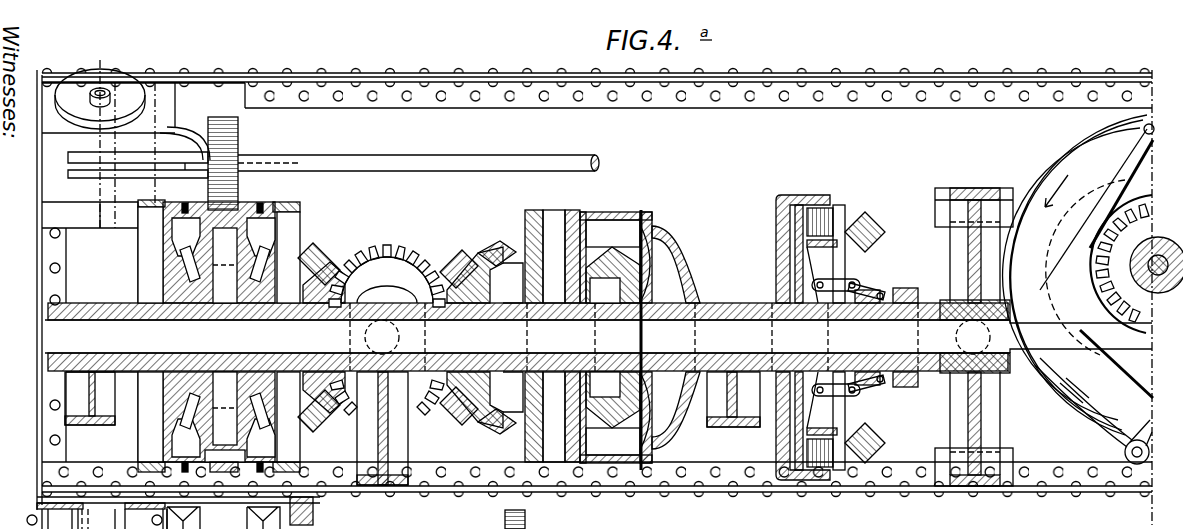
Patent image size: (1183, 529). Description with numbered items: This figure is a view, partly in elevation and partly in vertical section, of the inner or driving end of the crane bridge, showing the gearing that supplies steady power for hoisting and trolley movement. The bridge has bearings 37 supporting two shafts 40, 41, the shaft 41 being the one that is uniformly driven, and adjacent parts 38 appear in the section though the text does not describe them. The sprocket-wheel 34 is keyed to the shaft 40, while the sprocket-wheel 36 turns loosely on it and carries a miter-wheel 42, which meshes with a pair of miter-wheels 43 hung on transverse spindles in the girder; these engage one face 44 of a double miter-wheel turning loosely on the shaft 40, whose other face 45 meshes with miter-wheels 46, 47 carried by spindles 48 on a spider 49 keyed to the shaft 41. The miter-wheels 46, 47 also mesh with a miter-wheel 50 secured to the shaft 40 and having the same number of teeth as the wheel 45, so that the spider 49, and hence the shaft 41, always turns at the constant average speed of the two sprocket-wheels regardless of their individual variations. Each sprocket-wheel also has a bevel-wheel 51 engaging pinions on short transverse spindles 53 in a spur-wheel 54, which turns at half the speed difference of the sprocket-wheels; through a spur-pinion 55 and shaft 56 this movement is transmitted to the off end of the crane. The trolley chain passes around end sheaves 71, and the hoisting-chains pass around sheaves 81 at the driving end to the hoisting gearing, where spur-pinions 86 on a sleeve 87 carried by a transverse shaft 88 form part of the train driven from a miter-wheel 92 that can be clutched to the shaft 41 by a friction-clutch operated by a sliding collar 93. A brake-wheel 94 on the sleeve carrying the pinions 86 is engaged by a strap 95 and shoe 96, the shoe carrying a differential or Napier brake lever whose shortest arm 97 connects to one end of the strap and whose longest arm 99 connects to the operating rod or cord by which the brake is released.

The sprocket-wheel 34 is at (186, 337).
The sprocket-wheel 36 is at (261, 337).
The bearings 37 is at (539, 337).
The clutch block 38 is at (222, 329).
The shaft 40 is at (343, 337).
The shaft 41 is at (896, 337).
The miter-wheel 42 is at (315, 272).
The miter-wheels 43 is at (387, 258).
The face of double miter-wheel 44 is at (456, 270).
The face of double miter-wheel 45 is at (475, 337).
The miter-wheel 46 is at (500, 269).
The miter-wheel 47 is at (500, 409).
The spindles 48 is at (552, 336).
The frame or spider 49 is at (640, 340).
The miter-wheel 50 is at (622, 296).
The bevel-wheel 51 is at (178, 268).
The transverse spindles 53 is at (225, 336).
The spur-wheel 54 is at (224, 474).
The spur-pinion 55 is at (240, 143).
The shaft 56 is at (442, 160).
The end sheaves 71 is at (100, 99).
The sheaves 81 is at (128, 152).
The spur-pinion 86 is at (1121, 264).
The sleeve 87 is at (1146, 265).
The transverse shaft 88 is at (1149, 268).
The miter-wheel 92 is at (866, 230).
The sliding collar 93 is at (901, 297).
The brake-wheel 94 is at (1071, 274).
The strap 95 is at (1077, 150).
The shoe 96 is at (1102, 406).
The arm 97 is at (1125, 452).
The arm 99 is at (1120, 190).